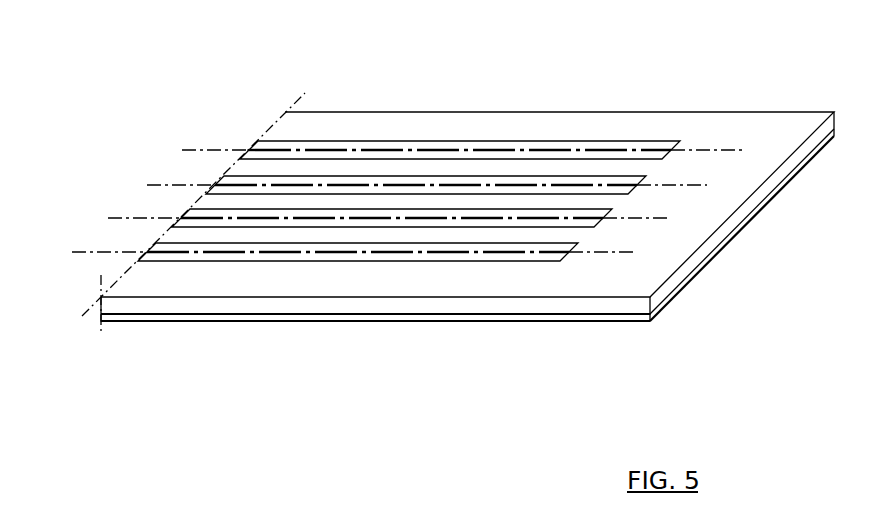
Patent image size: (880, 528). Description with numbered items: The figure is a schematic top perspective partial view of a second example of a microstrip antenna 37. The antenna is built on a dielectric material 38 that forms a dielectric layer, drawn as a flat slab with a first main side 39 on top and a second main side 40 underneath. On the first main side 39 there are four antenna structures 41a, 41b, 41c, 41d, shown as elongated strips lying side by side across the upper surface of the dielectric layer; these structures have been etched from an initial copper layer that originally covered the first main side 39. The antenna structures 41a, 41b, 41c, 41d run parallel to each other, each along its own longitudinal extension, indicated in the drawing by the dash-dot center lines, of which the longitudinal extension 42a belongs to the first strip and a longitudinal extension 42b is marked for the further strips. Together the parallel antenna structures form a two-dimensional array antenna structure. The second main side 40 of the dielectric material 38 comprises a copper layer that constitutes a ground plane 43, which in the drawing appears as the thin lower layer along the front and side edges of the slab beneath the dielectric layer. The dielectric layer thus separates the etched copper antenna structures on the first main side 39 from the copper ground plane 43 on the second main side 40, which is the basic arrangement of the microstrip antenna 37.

The microstrip antenna 37 is at (436, 226).
The dielectric material 38 is at (140, 305).
The first main side 39 is at (695, 126).
The second main side 40 is at (612, 324).
The antenna structure 41a is at (683, 153).
The antenna structure 41b is at (652, 187).
The antenna structure 41c is at (615, 222).
The antenna structure 41d is at (582, 257).
The longitudinal extension 42a is at (220, 148).
The longitudinal extension 42b is at (140, 216).
The ground plane 43 is at (528, 317).